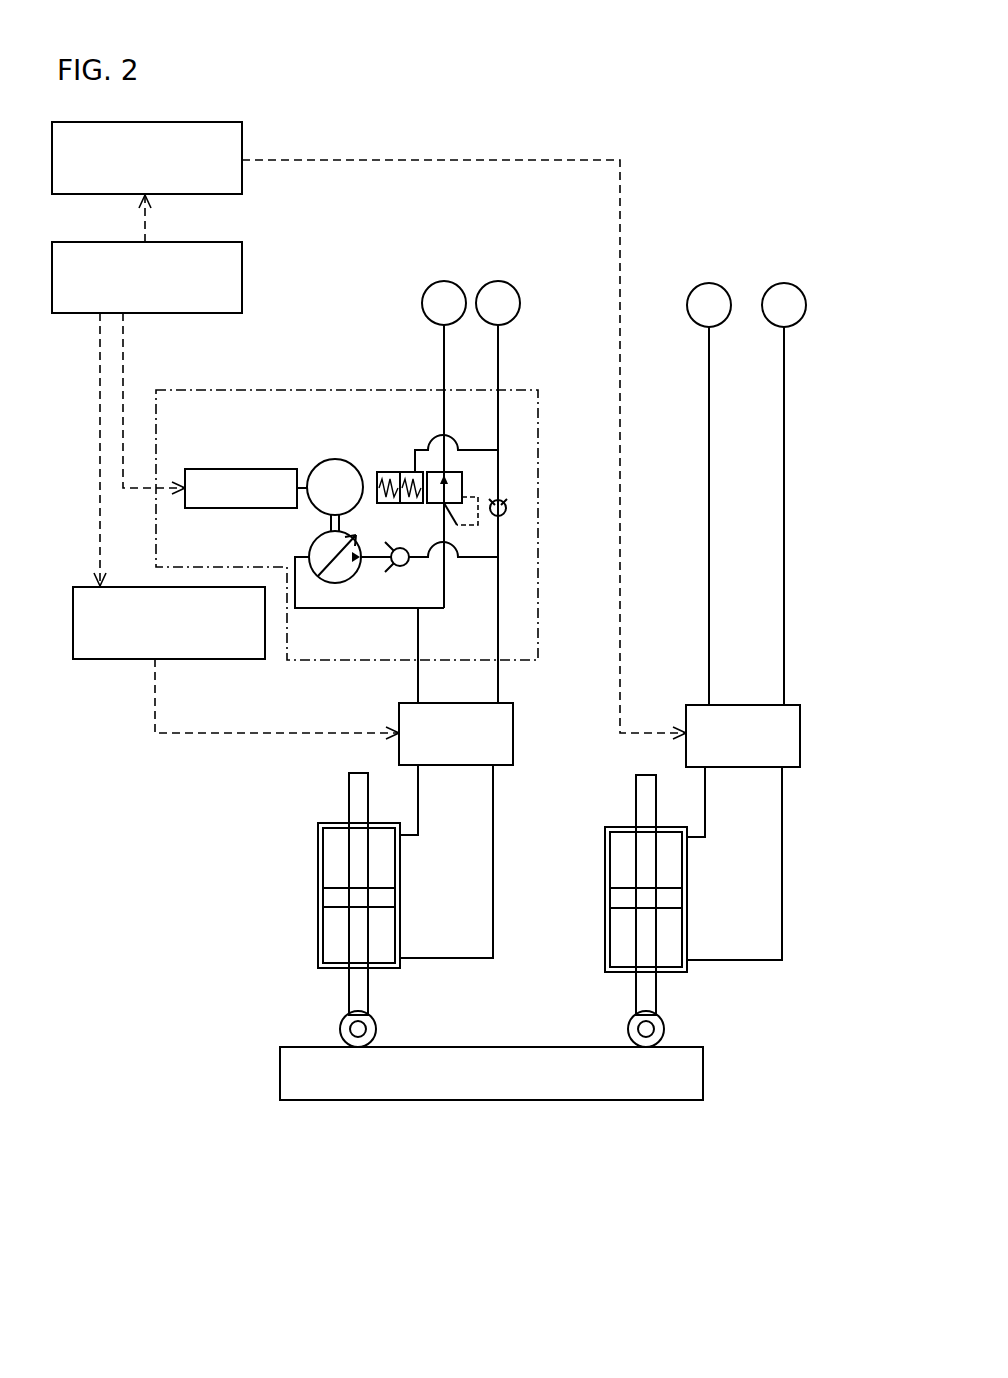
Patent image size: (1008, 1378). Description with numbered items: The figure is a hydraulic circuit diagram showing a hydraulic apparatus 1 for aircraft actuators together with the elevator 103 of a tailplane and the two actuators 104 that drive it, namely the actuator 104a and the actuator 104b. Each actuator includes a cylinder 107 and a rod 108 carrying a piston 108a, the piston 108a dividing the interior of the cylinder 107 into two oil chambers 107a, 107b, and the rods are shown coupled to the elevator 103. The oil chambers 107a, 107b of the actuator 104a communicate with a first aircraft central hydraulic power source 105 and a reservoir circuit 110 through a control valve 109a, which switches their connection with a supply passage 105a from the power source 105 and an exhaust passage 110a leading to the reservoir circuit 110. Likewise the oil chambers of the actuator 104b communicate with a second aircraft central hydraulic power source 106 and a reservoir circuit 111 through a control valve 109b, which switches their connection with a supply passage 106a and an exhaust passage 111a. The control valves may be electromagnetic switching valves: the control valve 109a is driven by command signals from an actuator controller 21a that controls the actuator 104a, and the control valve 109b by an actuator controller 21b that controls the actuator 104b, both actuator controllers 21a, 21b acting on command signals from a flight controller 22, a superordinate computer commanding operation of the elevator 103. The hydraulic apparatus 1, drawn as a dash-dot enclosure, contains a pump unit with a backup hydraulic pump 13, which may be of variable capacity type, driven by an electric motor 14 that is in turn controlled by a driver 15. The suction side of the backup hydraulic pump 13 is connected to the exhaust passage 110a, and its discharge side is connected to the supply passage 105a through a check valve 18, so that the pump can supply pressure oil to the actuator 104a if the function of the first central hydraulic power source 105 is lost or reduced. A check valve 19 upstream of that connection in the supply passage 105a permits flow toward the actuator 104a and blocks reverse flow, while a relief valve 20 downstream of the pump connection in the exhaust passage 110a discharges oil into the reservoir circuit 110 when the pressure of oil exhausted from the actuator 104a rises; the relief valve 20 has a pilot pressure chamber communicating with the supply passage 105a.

The hydraulic apparatus 1 is at (312, 388).
The backup hydraulic pump 13 is at (315, 532).
The electric motor 14 is at (335, 459).
The driver 15 is at (278, 468).
The check valve 18 is at (388, 575).
The check valve 19 is at (515, 496).
The relief valve 20 is at (400, 450).
The actuator controller 21a is at (130, 660).
The actuator controller 21b is at (242, 135).
The flight controller 22 is at (242, 268).
The elevator 103 is at (475, 1082).
The actuators 104 is at (477, 984).
The actuator 104a is at (308, 980).
The actuator 104b is at (700, 985).
The first aircraft central hydraulic power source 105 is at (510, 282).
The supply passage 105a is at (500, 349).
The second aircraft central hydraulic power source 106 is at (787, 283).
The supply passage 106a is at (785, 472).
The cylinder 107 is at (405, 873).
The oil chamber 107a is at (335, 852).
The oil chamber 107b is at (333, 938).
The rod 108 is at (372, 983).
The piston 108a is at (338, 897).
The control valve 109a is at (513, 712).
The control valve 109b is at (800, 730).
The reservoir circuit 110 is at (444, 281).
The exhaust passage 110a is at (443, 338).
The reservoir circuit 111 is at (709, 283).
The exhaust passage 111a is at (709, 475).